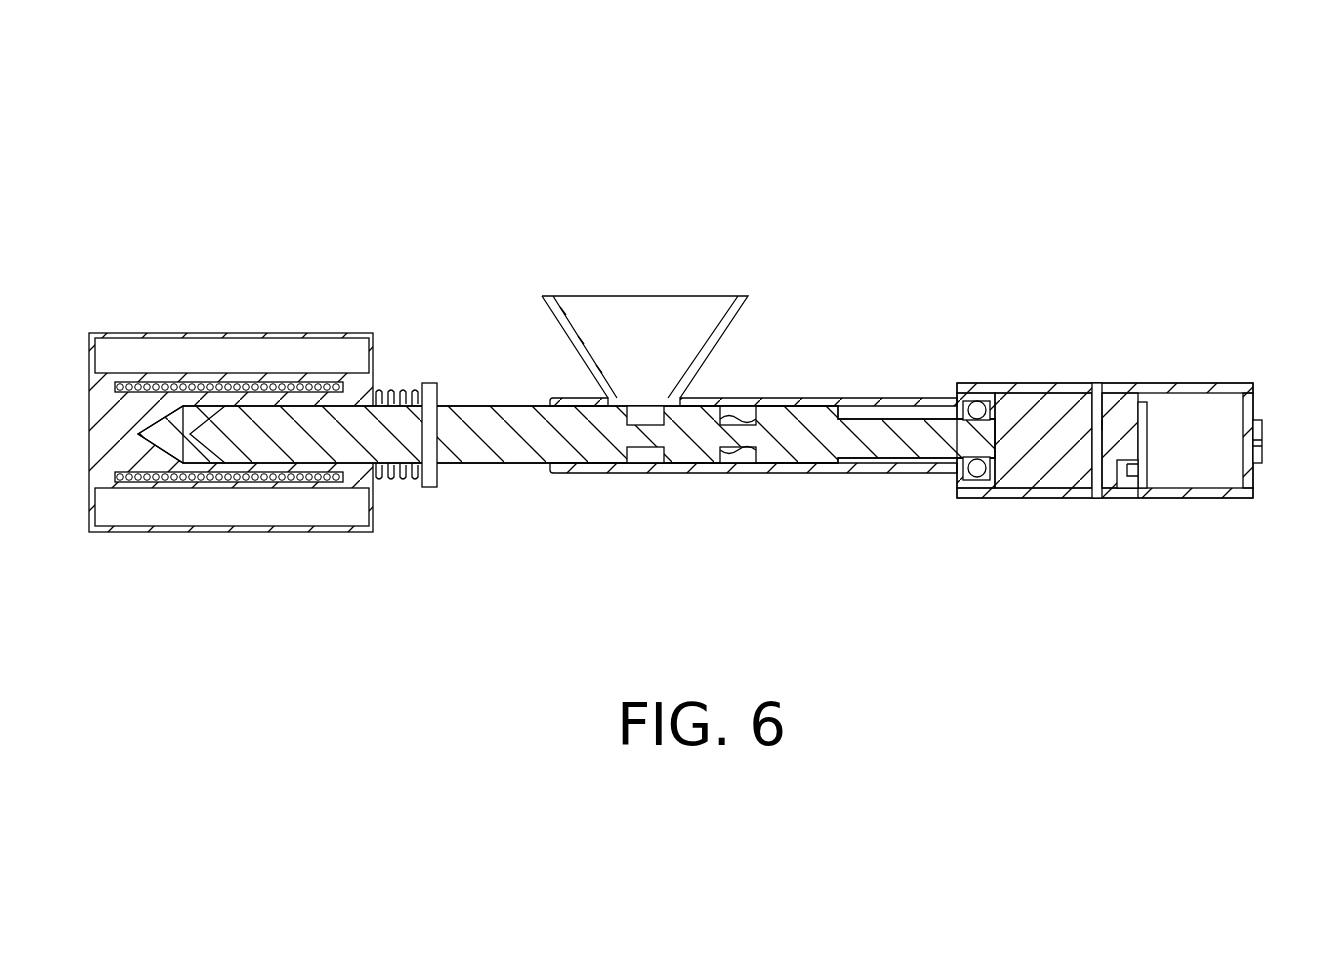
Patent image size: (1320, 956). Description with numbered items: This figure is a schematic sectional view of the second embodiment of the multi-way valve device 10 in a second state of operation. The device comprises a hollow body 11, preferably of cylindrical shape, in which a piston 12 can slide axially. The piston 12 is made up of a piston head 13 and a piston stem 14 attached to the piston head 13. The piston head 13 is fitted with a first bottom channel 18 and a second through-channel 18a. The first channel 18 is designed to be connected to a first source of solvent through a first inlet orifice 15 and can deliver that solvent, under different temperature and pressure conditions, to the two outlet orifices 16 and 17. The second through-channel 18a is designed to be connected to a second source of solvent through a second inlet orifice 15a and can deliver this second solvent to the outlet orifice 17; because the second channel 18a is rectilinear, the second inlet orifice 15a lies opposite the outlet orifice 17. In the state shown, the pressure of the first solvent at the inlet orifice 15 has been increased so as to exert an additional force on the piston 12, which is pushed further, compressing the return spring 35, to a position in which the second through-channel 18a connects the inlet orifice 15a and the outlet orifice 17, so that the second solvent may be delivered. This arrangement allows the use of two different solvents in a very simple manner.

The multi-way valve device 10 is at (791, 218).
The hollow body 11 is at (1030, 387).
The piston 12 is at (999, 392).
The piston head 13 is at (1037, 467).
The piston stem 14 is at (903, 440).
The first inlet orifice 15 is at (1266, 435).
The second inlet orifice 15a is at (1091, 388).
The outlet orifice 16 is at (1140, 495).
The outlet orifice 17 is at (1096, 493).
The first channel 18 is at (1140, 467).
The second through-channel 18a is at (1102, 424).
The return spring 35 is at (411, 393).